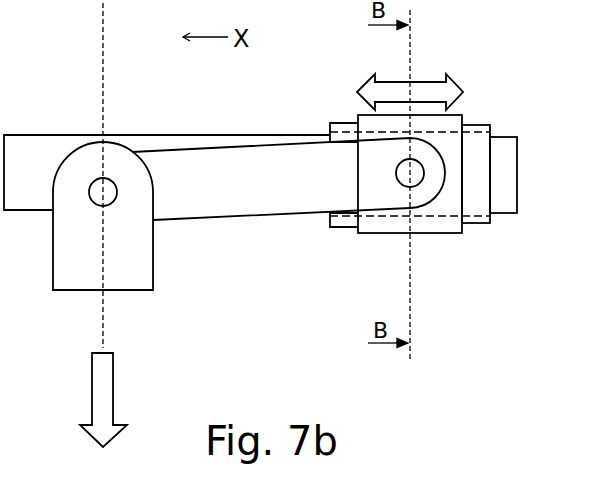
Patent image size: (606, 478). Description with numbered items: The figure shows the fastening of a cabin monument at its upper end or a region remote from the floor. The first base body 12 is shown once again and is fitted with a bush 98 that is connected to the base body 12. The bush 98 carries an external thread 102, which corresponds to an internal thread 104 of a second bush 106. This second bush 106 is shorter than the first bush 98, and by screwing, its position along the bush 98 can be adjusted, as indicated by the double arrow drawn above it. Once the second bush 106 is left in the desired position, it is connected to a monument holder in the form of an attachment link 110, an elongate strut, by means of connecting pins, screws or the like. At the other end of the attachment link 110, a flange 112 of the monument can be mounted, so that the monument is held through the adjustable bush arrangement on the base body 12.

The first base body 12 is at (42, 148).
The bush 98 is at (483, 140).
The external thread 102 is at (481, 224).
The internal thread 104 is at (452, 222).
The second bush 106 is at (453, 122).
The attachment link 110 is at (273, 207).
The flange 112 is at (125, 280).